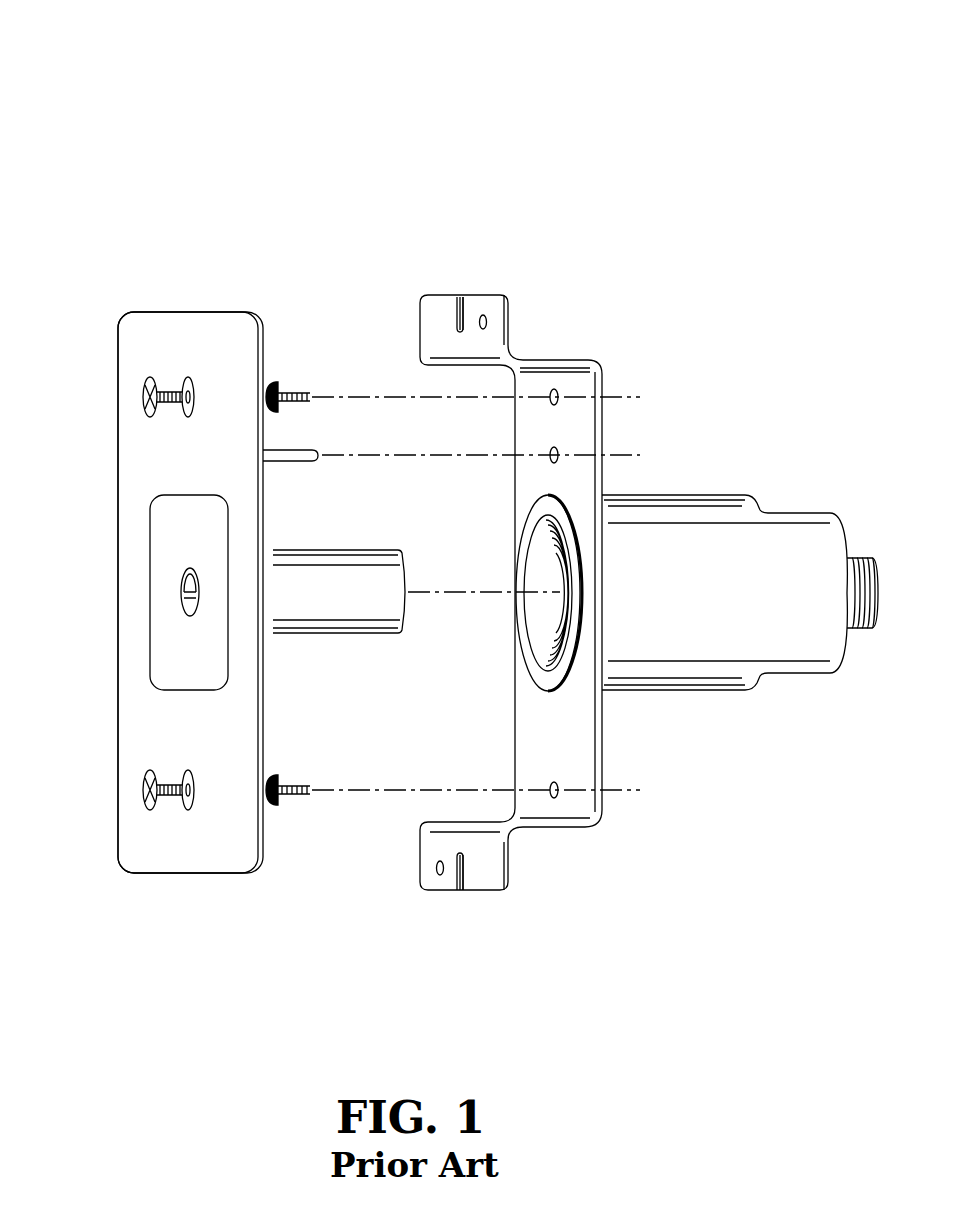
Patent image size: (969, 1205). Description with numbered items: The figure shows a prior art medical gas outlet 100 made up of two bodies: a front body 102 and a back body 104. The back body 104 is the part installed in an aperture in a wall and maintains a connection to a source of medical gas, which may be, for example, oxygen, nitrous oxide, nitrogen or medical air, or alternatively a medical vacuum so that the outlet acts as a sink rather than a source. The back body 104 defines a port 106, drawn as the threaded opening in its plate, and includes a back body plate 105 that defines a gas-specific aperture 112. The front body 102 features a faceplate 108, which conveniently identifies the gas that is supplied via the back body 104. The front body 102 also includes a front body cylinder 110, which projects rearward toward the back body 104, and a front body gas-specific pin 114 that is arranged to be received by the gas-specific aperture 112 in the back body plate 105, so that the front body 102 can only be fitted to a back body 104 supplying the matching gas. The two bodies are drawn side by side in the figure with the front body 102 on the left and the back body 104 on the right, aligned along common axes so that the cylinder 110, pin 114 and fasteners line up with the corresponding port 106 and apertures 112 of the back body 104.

The medical gas outlet 100 is at (196, 122).
The front body 102 is at (196, 295).
The back body 104 is at (543, 294).
The back body plate 105 is at (420, 330).
The port 106 is at (527, 540).
The faceplate 108 is at (135, 465).
The front body cylinder 110 is at (340, 578).
The gas-specific aperture 112 is at (553, 448).
The front body gas-specific pin 114 is at (305, 452).